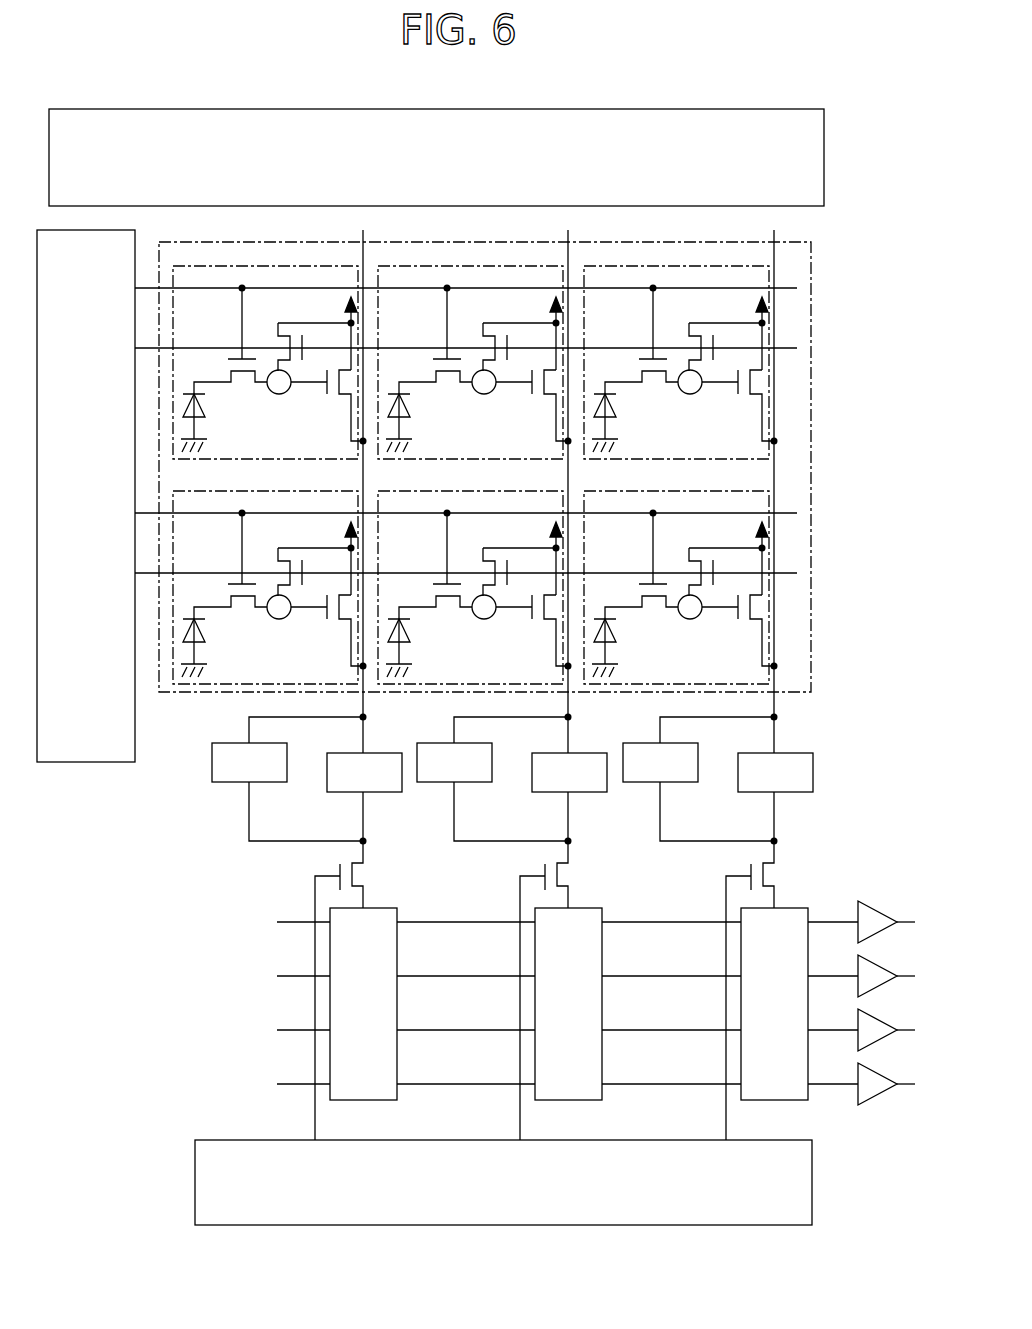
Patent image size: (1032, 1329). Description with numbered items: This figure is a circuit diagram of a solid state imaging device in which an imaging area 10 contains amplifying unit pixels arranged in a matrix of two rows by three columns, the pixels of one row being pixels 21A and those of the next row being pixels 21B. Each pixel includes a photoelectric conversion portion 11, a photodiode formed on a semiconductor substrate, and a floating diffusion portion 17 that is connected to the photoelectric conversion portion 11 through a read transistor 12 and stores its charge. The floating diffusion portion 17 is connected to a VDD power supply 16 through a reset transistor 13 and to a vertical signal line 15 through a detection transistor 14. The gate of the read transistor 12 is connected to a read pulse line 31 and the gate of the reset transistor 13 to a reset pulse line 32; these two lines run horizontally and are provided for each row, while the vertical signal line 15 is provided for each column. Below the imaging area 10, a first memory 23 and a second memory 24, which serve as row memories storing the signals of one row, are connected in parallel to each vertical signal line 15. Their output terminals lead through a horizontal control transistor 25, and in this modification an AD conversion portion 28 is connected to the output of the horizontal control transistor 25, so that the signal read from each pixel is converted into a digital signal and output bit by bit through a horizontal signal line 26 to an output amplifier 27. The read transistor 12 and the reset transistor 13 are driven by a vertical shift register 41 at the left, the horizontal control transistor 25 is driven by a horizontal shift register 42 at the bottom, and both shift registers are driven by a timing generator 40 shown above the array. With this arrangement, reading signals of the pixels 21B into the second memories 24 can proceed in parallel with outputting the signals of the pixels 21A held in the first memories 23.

The imaging area 10 is at (811, 640).
The photoelectric conversion portion 11 is at (612, 402).
The read transistor 12 is at (645, 347).
The reset transistor 13 is at (723, 344).
The detection transistor 14 is at (758, 378).
The vertical signal line 15 is at (775, 700).
The VDD power supply 16 is at (762, 295).
The floating diffusion portion 17 is at (690, 395).
The pixels of the nth row 21A is at (193, 688).
The pixels of the (n+1)th row 21B is at (290, 265).
The first memory 23 is at (332, 795).
The second memory 24 is at (216, 783).
The horizontal control transistor 25 is at (363, 893).
The horizontal signal line 26 is at (822, 922).
The output amplifier 27 is at (872, 935).
The AD conversion portion 28 is at (397, 946).
The read pulse line 31 is at (790, 287).
The reset pulse line 32 is at (790, 347).
The timing generator 40 is at (825, 141).
The vertical shift register 41 is at (72, 763).
The horizontal shift register 42 is at (195, 1180).